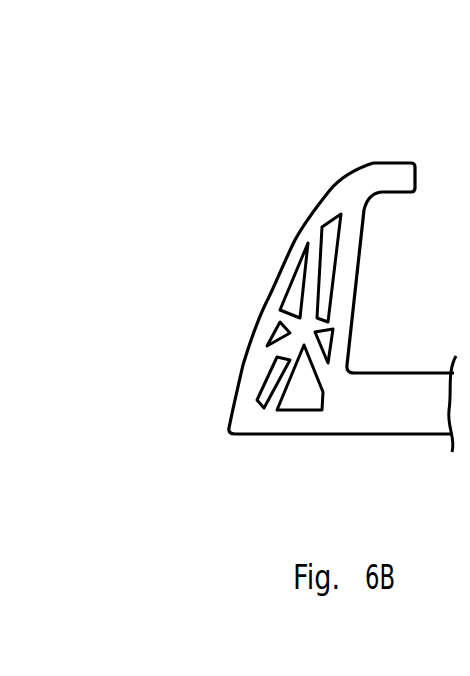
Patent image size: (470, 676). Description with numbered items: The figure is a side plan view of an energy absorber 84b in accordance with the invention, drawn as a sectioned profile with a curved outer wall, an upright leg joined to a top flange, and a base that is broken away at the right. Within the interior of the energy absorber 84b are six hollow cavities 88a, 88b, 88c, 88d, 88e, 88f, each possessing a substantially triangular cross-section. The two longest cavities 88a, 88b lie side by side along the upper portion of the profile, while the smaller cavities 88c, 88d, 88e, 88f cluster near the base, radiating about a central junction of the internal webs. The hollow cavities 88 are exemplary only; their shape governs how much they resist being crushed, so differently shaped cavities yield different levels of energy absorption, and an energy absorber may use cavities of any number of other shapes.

The hollow cavities 88 is at (213, 164).
The energy absorber 84b is at (373, 167).
The hollow cavity 88a is at (328, 221).
The hollow cavity 88b is at (298, 265).
The hollow cavity 88c is at (272, 328).
The hollow cavity 88d is at (268, 382).
The hollow cavity 88e is at (300, 402).
The hollow cavity 88f is at (320, 345).